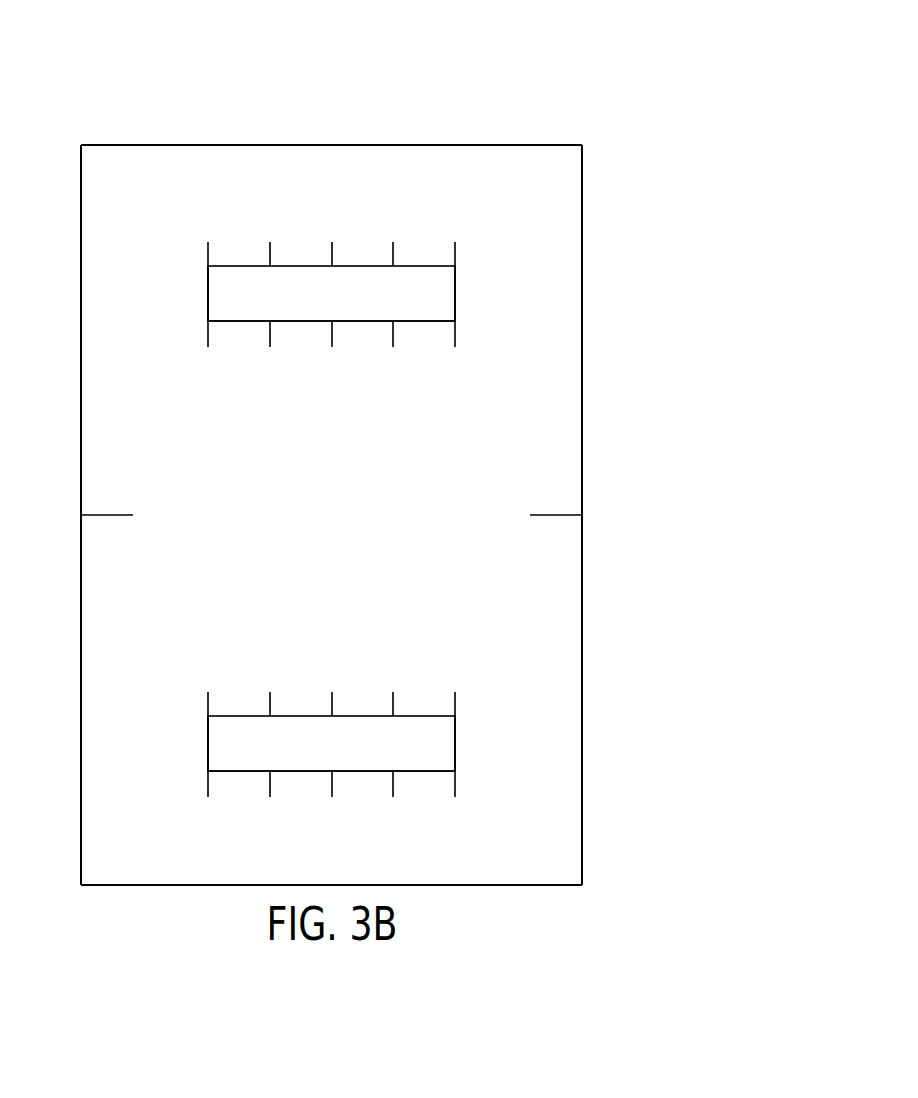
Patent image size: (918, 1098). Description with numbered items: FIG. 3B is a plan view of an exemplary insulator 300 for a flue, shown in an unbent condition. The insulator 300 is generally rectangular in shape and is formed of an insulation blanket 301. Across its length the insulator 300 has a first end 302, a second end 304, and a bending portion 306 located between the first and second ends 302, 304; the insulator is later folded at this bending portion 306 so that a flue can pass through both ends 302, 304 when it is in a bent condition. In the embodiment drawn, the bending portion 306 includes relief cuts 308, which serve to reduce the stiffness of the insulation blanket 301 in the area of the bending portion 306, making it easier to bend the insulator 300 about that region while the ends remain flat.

The insulator 300 is at (502, 92).
The insulation blanket 301 is at (572, 297).
The first end 302 is at (95, 380).
The second end 304 is at (97, 743).
The bending portion 306 is at (563, 560).
The relief cuts 308 is at (557, 515).